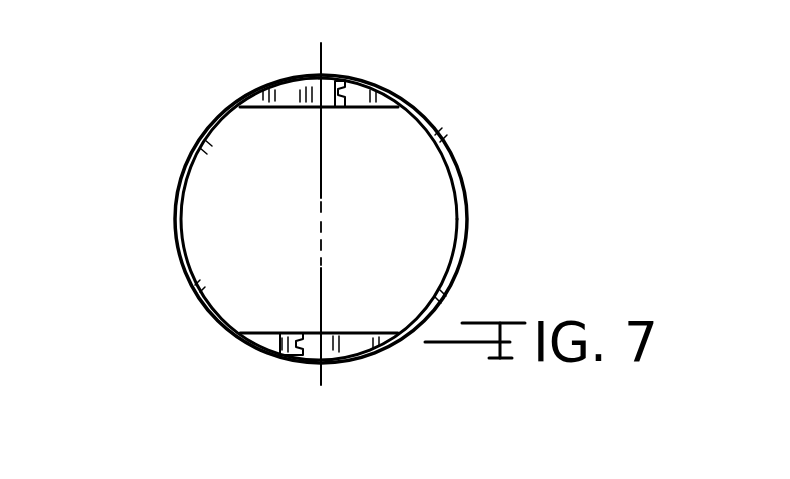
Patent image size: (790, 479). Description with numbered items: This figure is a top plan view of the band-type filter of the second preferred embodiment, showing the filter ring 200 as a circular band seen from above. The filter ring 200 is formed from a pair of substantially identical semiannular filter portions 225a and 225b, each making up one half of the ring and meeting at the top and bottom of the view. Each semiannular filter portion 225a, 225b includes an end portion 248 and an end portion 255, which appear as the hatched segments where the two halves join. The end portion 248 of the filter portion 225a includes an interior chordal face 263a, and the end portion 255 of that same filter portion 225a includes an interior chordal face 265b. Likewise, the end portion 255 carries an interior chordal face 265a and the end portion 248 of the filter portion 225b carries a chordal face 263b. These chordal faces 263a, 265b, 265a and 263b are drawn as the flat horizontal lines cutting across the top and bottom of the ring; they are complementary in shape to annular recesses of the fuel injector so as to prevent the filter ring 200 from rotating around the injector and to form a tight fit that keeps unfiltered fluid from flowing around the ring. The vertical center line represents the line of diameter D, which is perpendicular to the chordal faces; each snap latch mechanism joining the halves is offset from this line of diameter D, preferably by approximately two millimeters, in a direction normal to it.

The filter ring 200 is at (462, 108).
The semiannular filter portion 225a is at (468, 197).
The semiannular filter portion 225b is at (176, 250).
The end portion 248 is at (298, 95).
The end portion 255 is at (361, 102).
The interior chordal face 263a is at (345, 332).
The chordal face 263b is at (283, 109).
The interior chordal face 265a is at (373, 109).
The interior chordal face 265b is at (282, 332).
The line of diameter D is at (318, 261).